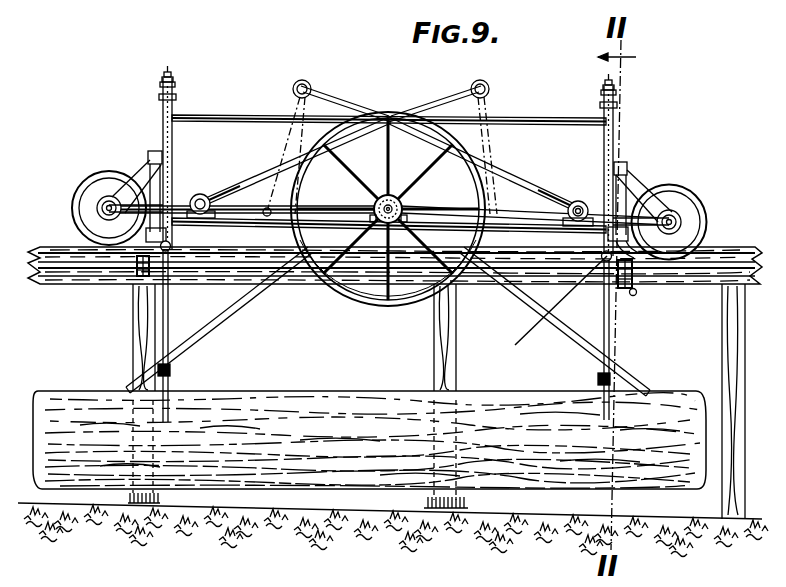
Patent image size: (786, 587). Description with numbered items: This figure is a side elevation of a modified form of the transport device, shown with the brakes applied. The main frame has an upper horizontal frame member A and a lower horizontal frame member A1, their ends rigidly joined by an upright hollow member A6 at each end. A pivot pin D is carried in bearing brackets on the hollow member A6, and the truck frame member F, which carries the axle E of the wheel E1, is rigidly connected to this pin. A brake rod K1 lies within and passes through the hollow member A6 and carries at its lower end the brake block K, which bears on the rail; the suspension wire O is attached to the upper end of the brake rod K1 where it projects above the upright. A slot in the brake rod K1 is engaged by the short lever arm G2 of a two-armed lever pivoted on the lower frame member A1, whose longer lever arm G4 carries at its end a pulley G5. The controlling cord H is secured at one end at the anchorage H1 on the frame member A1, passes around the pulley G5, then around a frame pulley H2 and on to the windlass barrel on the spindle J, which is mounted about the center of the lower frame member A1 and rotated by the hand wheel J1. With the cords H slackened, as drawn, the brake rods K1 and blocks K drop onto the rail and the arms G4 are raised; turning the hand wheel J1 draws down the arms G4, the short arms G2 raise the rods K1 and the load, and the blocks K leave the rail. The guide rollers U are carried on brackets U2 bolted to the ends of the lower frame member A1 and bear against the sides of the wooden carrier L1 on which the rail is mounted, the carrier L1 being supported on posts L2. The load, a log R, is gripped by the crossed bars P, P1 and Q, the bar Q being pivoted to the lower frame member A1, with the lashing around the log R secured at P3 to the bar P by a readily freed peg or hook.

The upper horizontal frame member A is at (231, 116).
The lower horizontal frame member A1 is at (590, 234).
The upright hollow member A6 is at (165, 94).
The suspension wire O is at (388, 106).
The brake rod K1 is at (170, 138).
The windlass spindle J is at (393, 198).
The hand wheel J1 is at (388, 294).
The pulley G5 is at (327, 134).
The longer lever arm G4 is at (319, 97).
The short lever arm G2 is at (573, 202).
The controlling cord H is at (291, 166).
The cord anchorage H1 is at (253, 181).
The frame pulley H2 is at (390, 225).
The axle E is at (107, 187).
The wheel E1 is at (96, 208).
The pivot pin D is at (626, 190).
The truck frame member F is at (628, 175).
The guide roller U is at (140, 262).
The roller bracket U2 is at (645, 241).
The load bar P is at (177, 330).
The second load bar P1 is at (176, 302).
The lashing fastening P3 is at (170, 369).
The bar Q is at (217, 322).
The brake block K is at (396, 288).
The wooden carrier L1 is at (468, 276).
The post L2 is at (447, 360).
The log R is at (400, 427).